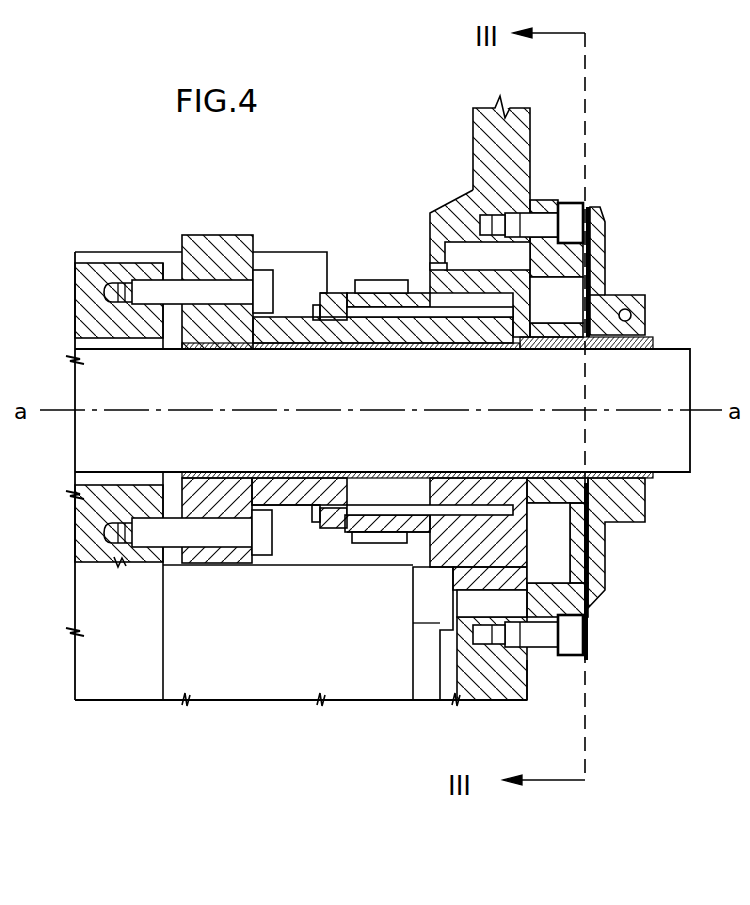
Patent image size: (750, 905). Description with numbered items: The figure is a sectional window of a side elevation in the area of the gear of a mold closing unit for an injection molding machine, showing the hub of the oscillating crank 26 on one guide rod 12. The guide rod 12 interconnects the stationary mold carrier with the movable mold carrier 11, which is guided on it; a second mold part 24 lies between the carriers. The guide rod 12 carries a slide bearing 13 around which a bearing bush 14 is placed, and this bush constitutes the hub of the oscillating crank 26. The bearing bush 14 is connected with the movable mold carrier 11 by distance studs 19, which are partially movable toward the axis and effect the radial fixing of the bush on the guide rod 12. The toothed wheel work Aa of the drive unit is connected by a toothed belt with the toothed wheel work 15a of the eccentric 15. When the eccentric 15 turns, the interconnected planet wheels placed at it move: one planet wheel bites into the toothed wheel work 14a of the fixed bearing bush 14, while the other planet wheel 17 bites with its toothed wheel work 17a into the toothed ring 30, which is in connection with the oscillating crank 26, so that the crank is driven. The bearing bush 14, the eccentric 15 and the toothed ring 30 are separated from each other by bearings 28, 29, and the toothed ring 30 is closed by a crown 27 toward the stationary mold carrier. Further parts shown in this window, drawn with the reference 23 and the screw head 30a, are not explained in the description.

The movable mold carrier 11 is at (126, 665).
The guide rod 12 is at (662, 443).
The slide bearing 13 is at (382, 347).
The bearing bush 14 is at (417, 363).
The toothed wheel work of the bearing bush 14a is at (597, 320).
The eccentric 15 is at (453, 287).
The toothed wheel work of the eccentric 15a is at (386, 294).
The planet wheel 17 is at (586, 567).
The toothed wheel work of the planet wheel 17a is at (558, 553).
The distance stud 19 is at (177, 288).
The ring 23 is at (430, 595).
The second mold part 24 is at (232, 680).
The oscillating crank 26 is at (513, 130).
The crown 27 is at (610, 243).
The bearing 28 is at (488, 253).
The bearing 29 is at (483, 313).
The toothed ring 30 is at (538, 205).
The screw head 30a is at (570, 222).
The toothed wheel work of the drive unit Aa is at (367, 541).